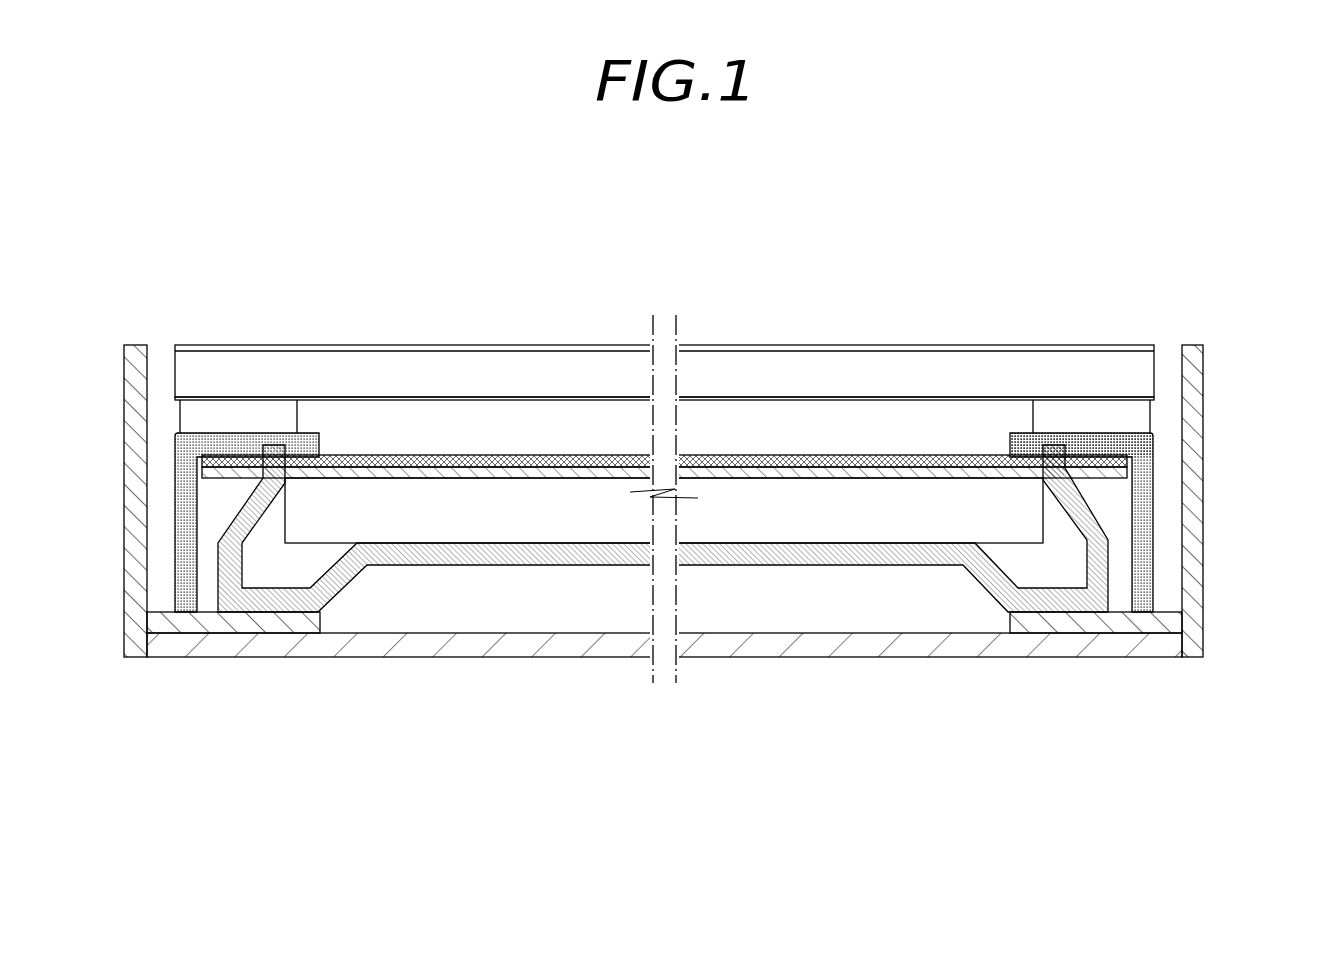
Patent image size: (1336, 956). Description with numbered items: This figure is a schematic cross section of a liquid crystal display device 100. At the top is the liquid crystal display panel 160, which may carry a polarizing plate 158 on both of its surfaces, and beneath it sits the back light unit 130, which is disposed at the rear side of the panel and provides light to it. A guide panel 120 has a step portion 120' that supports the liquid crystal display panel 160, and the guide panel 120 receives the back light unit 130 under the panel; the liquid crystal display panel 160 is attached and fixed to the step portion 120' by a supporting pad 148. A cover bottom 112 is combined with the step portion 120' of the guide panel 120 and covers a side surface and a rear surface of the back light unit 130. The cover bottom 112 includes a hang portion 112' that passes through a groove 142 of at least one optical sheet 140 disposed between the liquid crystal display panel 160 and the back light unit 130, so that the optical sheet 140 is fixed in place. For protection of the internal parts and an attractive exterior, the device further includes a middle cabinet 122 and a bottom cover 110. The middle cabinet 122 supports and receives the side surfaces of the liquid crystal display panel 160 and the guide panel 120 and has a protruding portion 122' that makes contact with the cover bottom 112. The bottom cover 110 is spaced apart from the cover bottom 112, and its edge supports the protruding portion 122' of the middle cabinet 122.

The liquid crystal display device 100 is at (170, 263).
The bottom cover 110 is at (840, 645).
The cover bottom 112 is at (663, 591).
The hang portion 112' is at (1161, 433).
The guide panel 120 is at (729, 522).
The step portion 120' is at (1061, 353).
The middle cabinet 122 is at (703, 501).
The protruding portion 122' is at (664, 674).
The back light unit 130 is at (753, 530).
The optical sheet 140 is at (773, 470).
The groove 142 is at (1050, 470).
The supporting pad 148 is at (1115, 410).
The polarizing plate 158 is at (483, 397).
The liquid crystal display panel 160 is at (1053, 367).